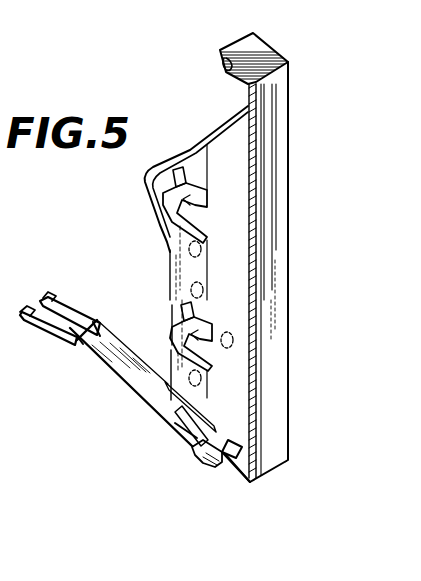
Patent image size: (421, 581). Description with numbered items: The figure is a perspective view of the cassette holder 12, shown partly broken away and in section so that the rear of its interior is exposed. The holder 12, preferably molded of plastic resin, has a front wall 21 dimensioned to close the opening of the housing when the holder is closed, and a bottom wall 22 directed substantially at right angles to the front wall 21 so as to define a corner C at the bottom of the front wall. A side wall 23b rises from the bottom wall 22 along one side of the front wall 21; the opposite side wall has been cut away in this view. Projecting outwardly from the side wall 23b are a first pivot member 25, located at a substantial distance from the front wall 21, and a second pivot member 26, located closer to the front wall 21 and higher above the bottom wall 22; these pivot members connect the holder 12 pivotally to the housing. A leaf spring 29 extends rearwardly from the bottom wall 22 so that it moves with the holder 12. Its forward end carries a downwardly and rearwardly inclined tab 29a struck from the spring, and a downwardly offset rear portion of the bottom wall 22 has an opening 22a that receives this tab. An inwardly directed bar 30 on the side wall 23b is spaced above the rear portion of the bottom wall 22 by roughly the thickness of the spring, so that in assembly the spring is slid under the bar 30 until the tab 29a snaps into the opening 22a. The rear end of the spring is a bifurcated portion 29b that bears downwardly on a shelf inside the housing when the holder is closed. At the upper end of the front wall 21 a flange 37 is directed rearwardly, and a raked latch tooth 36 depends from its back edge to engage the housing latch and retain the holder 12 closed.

The holder 12 is at (296, 256).
The front wall 21 is at (275, 368).
The bottom wall 22 is at (207, 458).
The opening 22a is at (178, 426).
The side wall 23b is at (227, 150).
The first pivot member 25 is at (170, 352).
The second pivot member 26 is at (226, 331).
The leaf spring 29 is at (103, 360).
The tab 29a is at (193, 450).
The bifurcated rear end portion 29b is at (68, 312).
The bar 30 is at (212, 414).
The latch element 36 is at (221, 63).
The flange 37 is at (258, 47).
The corner C is at (271, 478).